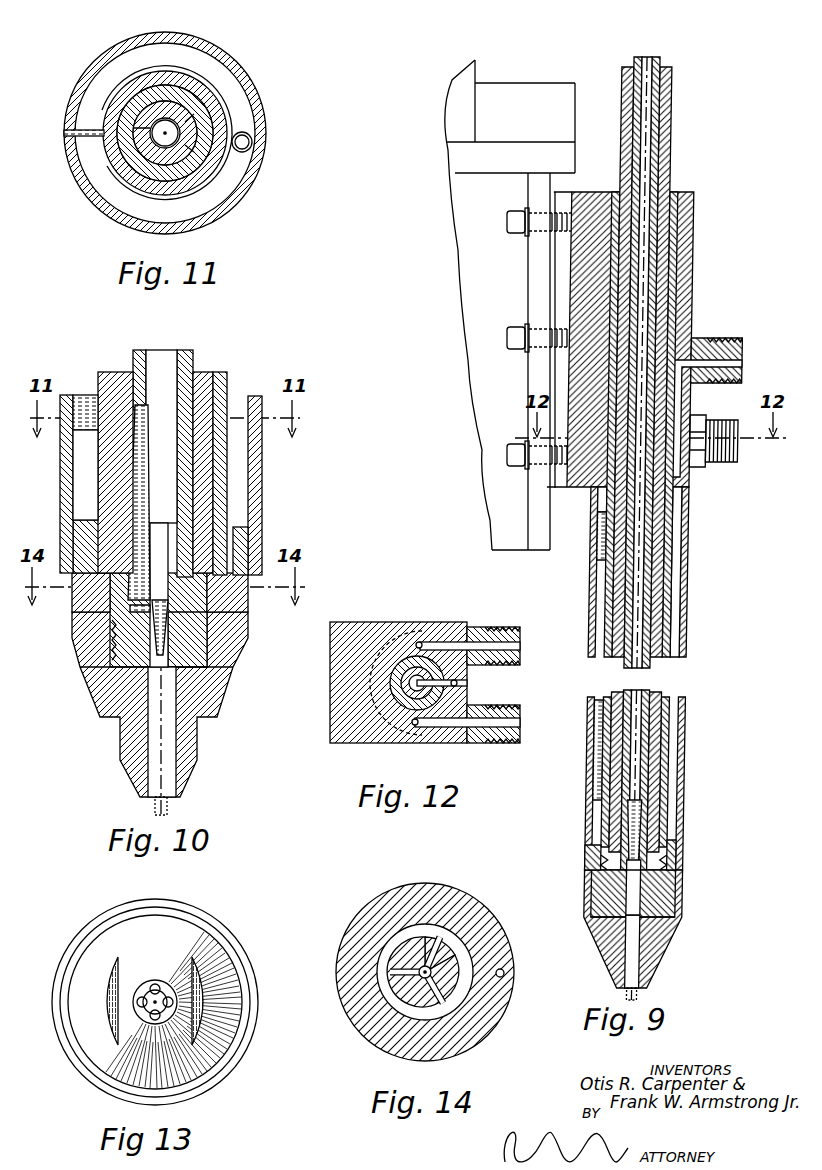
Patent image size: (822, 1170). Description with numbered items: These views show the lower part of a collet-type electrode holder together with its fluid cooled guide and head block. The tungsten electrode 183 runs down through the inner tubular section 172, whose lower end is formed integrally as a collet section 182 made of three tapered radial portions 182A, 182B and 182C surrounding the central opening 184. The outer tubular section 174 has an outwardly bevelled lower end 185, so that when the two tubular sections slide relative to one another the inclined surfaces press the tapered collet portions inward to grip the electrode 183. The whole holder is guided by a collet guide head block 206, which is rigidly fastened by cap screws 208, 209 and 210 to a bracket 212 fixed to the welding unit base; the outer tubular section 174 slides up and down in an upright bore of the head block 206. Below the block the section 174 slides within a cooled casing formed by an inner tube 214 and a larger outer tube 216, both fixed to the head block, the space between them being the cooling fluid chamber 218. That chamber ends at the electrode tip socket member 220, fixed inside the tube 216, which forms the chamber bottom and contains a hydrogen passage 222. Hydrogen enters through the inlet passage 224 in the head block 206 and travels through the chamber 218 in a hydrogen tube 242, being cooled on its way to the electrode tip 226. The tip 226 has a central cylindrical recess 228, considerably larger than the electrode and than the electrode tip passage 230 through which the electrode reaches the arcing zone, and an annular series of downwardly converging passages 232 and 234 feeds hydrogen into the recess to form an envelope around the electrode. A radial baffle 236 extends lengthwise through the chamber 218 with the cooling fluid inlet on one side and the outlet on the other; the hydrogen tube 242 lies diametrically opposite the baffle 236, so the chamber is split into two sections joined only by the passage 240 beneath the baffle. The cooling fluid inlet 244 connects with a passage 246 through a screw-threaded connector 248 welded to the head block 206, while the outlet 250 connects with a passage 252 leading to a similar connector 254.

In FIG. 11, the inner tubular section 172 is at (217, 120).
In FIG. 10, the inner tubular section 172 is at (180, 365).
In FIG. 9, the inner tubular section 172 is at (655, 62).
In FIG. 11, the outer tubular section 174 is at (208, 133).
In FIG. 10, the outer tubular section 174 is at (205, 375).
In FIG. 9, the outer tubular section 174 is at (673, 90).
In FIG. 10, the collet section 182 is at (125, 600).
In FIG. 9, the collet section 182 is at (674, 870).
In FIG. 14, the radial portion 182A is at (410, 945).
In FIG. 14, the radial portion 182B is at (460, 960).
In FIG. 14, the radial portion 182C is at (400, 1000).
In FIG. 11, the tungsten electrode 183 is at (173, 115).
In FIG. 9, the tungsten electrode 183 is at (653, 145).
In FIG. 10, the opening 184 is at (160, 533).
In FIG. 9, the opening 184 is at (655, 848).
In FIG. 14, the opening 184 is at (425, 968).
In FIG. 10, the outwardly bevelled lower end 185 is at (190, 555).
In FIG. 9, the collet guide head block 206 is at (697, 283).
In FIG. 12, the collet guide head block 206 is at (373, 630).
In FIG. 9, the cap screw 208 is at (507, 222).
In FIG. 9, the cap screw 209 is at (507, 338).
In FIG. 9, the cap screw 210 is at (507, 457).
In FIG. 9, the bracket 212 is at (471, 275).
In FIG. 11, the inner tube 214 is at (225, 153).
In FIG. 10, the inner tube 214 is at (228, 382).
In FIG. 9, the inner tube 214 is at (682, 537).
In FIG. 11, the outer tube 216 is at (258, 181).
In FIG. 10, the outer tube 216 is at (262, 548).
In FIG. 9, the outer tube 216 is at (698, 578).
In FIG. 9, the cooling fluid chamber 218 is at (698, 628).
In FIG. 10, the electrode tip socket member 220 is at (76, 522).
In FIG. 9, the electrode tip socket member 220 is at (600, 878).
In FIG. 10, the hydrogen passage 222 is at (246, 626).
In FIG. 9, the hydrogen passage 222 is at (693, 882).
In FIG. 9, the hydrogen inlet passage 224 is at (696, 478).
In FIG. 12, the hydrogen inlet passage 224 is at (458, 685).
In FIG. 10, the electrode tip 226 is at (226, 706).
In FIG. 9, the electrode tip 226 is at (691, 934).
In FIG. 13, the electrode tip 226 is at (233, 955).
In FIG. 10, the central cylindrical recess 228 is at (150, 735).
In FIG. 9, the central cylindrical recess 228 is at (656, 958).
In FIG. 10, the electrode tip passage 230 is at (145, 692).
In FIG. 9, the electrode tip passage 230 is at (627, 935).
In FIG. 10, the hydrogen passage 232 is at (155, 680).
In FIG. 9, the hydrogen passage 232 is at (618, 898).
In FIG. 13, the hydrogen passage 232 is at (140, 973).
In FIG. 10, the hydrogen passage 234 is at (183, 642).
In FIG. 9, the hydrogen passage 234 is at (675, 905).
In FIG. 13, the hydrogen passage 234 is at (177, 980).
In FIG. 11, the radial baffle 236 is at (92, 140).
In FIG. 10, the radial baffle 236 is at (90, 398).
In FIG. 9, the radial baffle 236 is at (601, 797).
In FIG. 10, the passage 240 is at (86, 458).
In FIG. 11, the hydrogen tube 242 is at (254, 138).
In FIG. 9, the cooling fluid inlet 244 is at (692, 500).
In FIG. 12, the cooling fluid inlet 244 is at (426, 640).
In FIG. 9, the passage 246 is at (697, 338).
In FIG. 12, the passage 246 is at (486, 628).
In FIG. 12, the screw-threaded connector 248 is at (516, 633).
In FIG. 12, the cooling fluid outlet 250 is at (416, 726).
In FIG. 12, the passage 252 is at (455, 727).
In FIG. 12, the connector 254 is at (520, 720).